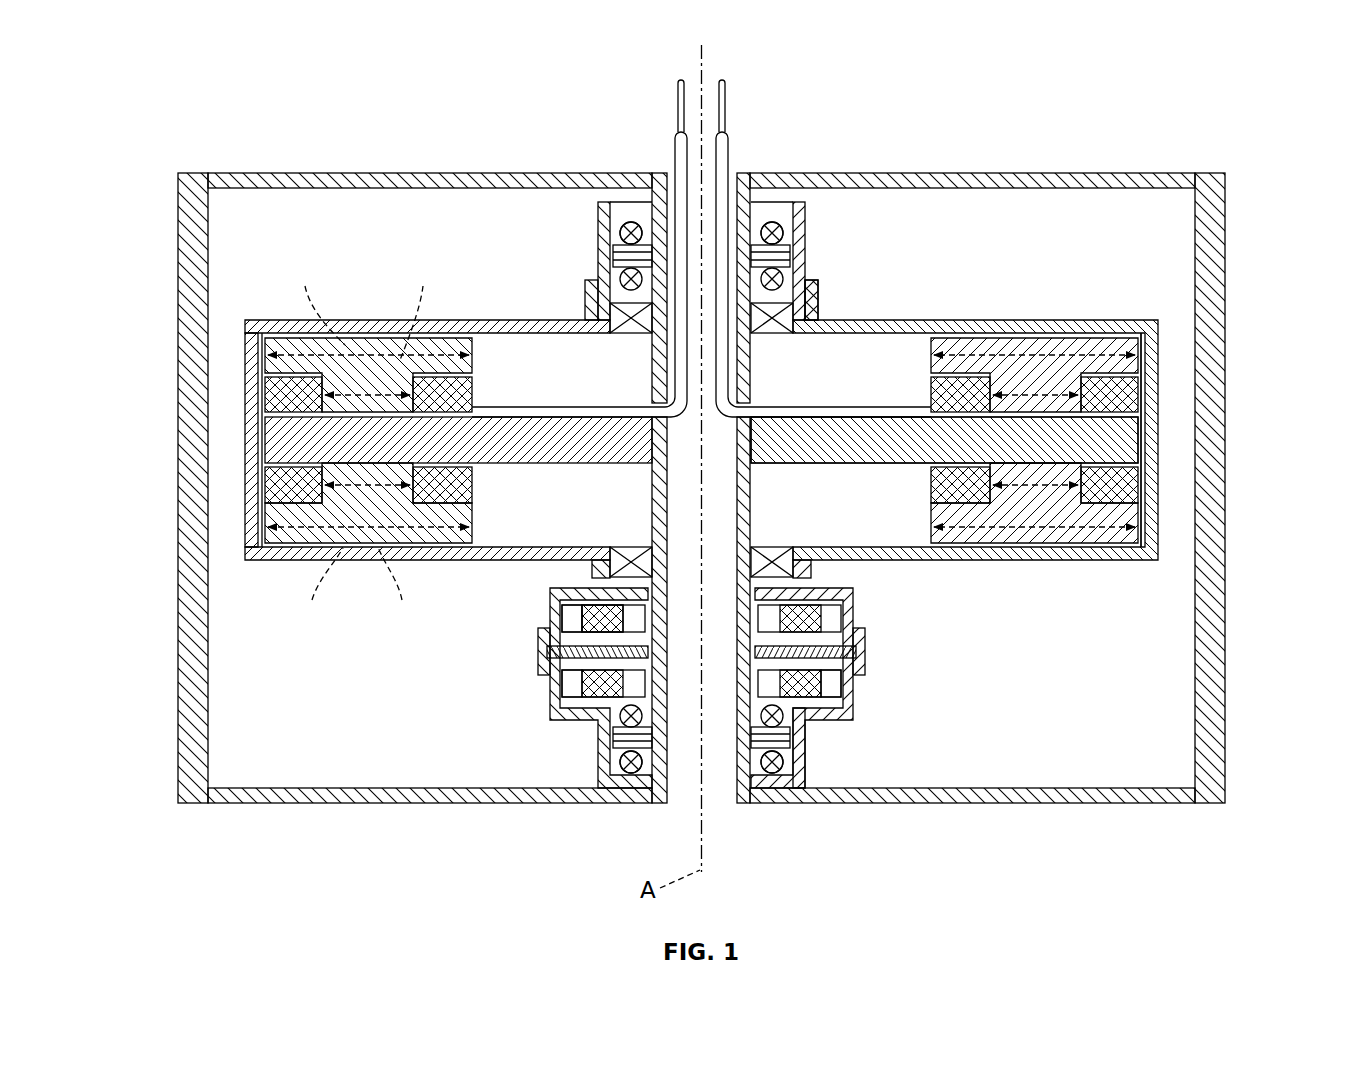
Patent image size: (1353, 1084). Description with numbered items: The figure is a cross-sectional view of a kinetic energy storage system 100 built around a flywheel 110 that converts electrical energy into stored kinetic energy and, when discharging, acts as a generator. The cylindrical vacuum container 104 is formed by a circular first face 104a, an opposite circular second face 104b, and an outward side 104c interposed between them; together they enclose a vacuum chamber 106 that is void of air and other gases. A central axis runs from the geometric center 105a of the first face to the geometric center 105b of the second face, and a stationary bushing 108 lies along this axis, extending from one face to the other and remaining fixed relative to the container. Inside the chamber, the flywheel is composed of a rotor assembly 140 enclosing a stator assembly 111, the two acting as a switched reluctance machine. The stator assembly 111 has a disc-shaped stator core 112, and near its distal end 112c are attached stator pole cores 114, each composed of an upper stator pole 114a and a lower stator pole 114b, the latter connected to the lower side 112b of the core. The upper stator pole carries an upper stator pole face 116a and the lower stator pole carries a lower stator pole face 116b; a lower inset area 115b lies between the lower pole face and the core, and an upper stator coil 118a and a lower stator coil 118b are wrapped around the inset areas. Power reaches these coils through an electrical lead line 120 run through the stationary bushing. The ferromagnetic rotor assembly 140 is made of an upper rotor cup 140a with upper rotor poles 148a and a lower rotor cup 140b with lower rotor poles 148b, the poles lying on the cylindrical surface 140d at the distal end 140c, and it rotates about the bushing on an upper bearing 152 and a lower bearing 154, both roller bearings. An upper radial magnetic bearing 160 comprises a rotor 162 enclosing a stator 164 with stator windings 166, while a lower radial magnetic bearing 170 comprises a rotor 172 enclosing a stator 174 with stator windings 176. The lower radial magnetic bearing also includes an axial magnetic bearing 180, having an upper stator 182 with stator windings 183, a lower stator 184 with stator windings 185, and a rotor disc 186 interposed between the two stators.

The kinetic energy storage system 100 is at (172, 103).
The vacuum container 104 is at (652, 493).
The first face 104a is at (430, 172).
The second face 104b is at (552, 795).
The outward side 104c is at (200, 470).
The geometric center of the first face 105a is at (698, 165).
The geometric center of the second face 105b is at (704, 810).
The vacuum chamber 106 is at (1050, 722).
The stationary bushing 108 is at (704, 803).
The flywheel 110 is at (345, 428).
The stator assembly 111 is at (1162, 560).
The stator core 112 is at (1037, 427).
The lower side of the stator core 112b is at (775, 465).
The distal end of the stator core 112c is at (1152, 440).
The stator pole core 114 is at (1048, 355).
The upper stator pole 114a is at (1000, 380).
The lower stator pole 114b is at (1060, 507).
The lower inset area 115b is at (925, 480).
The upper stator pole face 116a is at (1110, 390).
The lower stator pole face 116b is at (1000, 527).
The upper stator coil 118a is at (1150, 440).
The lower stator coil 118b is at (1152, 487).
The electrical lead line 120 is at (728, 152).
The rotor assembly 140 is at (937, 332).
The upper rotor cup 140a is at (245, 350).
The lower rotor cup 140b is at (243, 530).
The distal end of the rotor assembly 140c is at (243, 322).
The cylindrical surface 140d is at (243, 422).
The upper rotor pole 148a is at (1160, 372).
The lower rotor pole 148b is at (1158, 512).
The upper bearing 152 is at (814, 287).
The lower bearing 154 is at (640, 565).
The upper radial magnetic bearing 160 is at (561, 223).
The rotor of the upper radial magnetic bearing 162 is at (830, 223).
The stator of the upper radial magnetic bearing 164 is at (778, 224).
The stator windings of the upper radial magnetic bearing 166 is at (630, 222).
The lower radial magnetic bearing 170 is at (530, 679).
The rotor of the lower radial magnetic bearing 172 is at (808, 745).
The stator of the lower radial magnetic bearing 174 is at (774, 772).
The stator windings of the lower radial magnetic bearing 176 is at (630, 773).
The axial magnetic bearing 180 is at (860, 730).
The upper stator of the axial magnetic bearing 182 is at (565, 617).
The stator windings of the upper stator 183 is at (605, 612).
The lower stator of the axial magnetic bearing 184 is at (565, 690).
The stator windings of the lower stator 185 is at (590, 722).
The rotor disc 186 is at (845, 690).